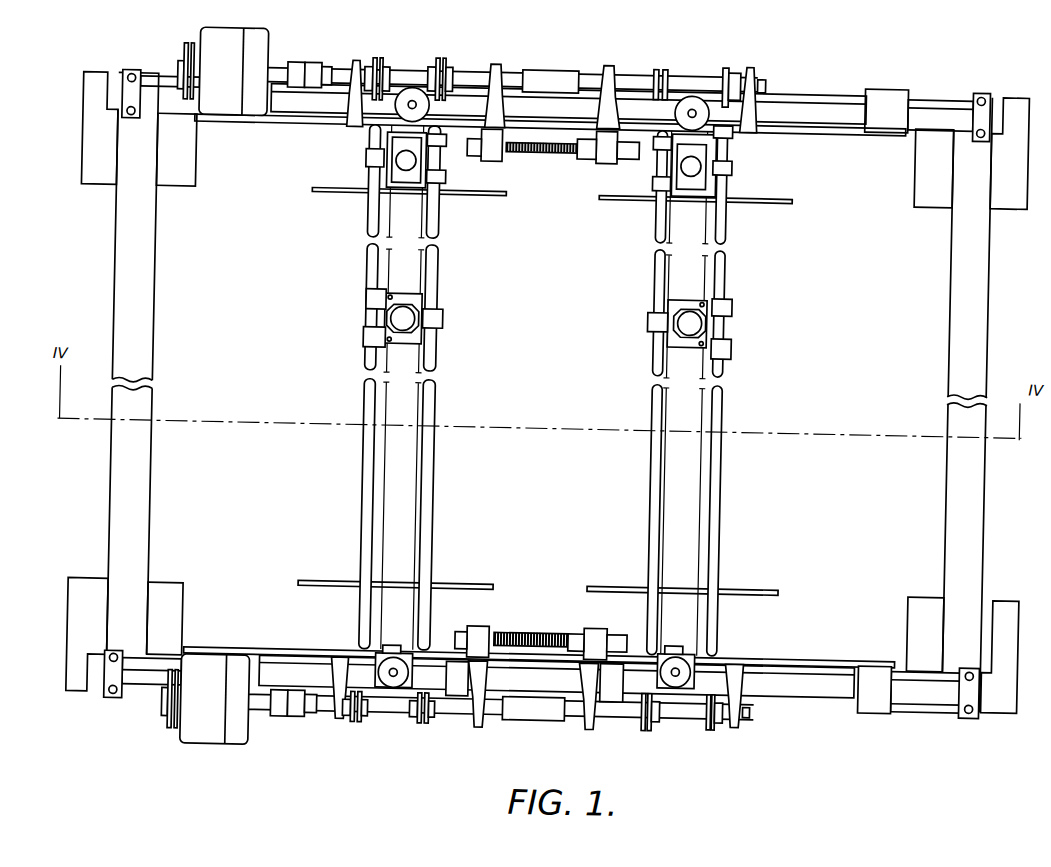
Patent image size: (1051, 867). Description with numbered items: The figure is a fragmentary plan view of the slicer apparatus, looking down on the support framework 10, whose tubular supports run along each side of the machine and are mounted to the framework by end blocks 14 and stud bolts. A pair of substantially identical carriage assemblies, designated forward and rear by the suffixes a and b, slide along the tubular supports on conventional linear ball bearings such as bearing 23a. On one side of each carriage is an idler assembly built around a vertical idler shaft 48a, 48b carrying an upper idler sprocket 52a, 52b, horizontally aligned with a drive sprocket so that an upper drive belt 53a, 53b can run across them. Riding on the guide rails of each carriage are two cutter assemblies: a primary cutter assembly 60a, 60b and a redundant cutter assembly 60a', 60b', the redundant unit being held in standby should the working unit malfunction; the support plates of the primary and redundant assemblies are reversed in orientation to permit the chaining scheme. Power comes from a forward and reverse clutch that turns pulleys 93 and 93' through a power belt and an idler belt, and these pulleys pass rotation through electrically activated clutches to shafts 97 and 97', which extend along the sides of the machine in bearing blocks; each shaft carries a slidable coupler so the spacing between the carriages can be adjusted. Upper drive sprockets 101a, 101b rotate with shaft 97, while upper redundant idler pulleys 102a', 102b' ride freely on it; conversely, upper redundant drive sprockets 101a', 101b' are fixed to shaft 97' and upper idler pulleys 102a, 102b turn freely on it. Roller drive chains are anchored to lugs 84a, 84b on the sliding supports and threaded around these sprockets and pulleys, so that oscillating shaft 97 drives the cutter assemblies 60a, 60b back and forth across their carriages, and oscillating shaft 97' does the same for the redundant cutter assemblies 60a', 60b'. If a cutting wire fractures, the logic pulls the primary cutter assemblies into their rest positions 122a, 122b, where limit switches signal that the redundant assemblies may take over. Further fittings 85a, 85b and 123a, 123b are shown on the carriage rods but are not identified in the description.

The support framework 10 is at (75, 146).
The end blocks 14 is at (973, 670).
The linear ball bearing 23a is at (466, 698).
The vertical idler shaft 48a is at (370, 156).
The vertical idler shaft 48b is at (716, 132).
The upper idler sprocket 52a is at (403, 110).
The upper idler sprocket 52b is at (692, 113).
The upper drive belt 53a is at (389, 271).
The upper drive belt 53b is at (677, 253).
The cutter assembly 60a is at (440, 312).
The cutter assembly 60b is at (679, 309).
The redundant cutter assembly 60a' is at (446, 187).
The redundant cutter assembly 60b' is at (730, 187).
The lug 84a is at (364, 298).
The lug 84b is at (728, 298).
The collar 85a is at (366, 284).
The collar 85b is at (722, 288).
The pulley 93 is at (164, 66).
The pulley 93' is at (152, 714).
The shaft 97 is at (783, 78).
The shaft 97' is at (791, 722).
The upper drive sprocket 101a is at (400, 59).
The upper drive sprocket 101b is at (750, 67).
The upper redundant drive sprocket 101a' is at (417, 731).
The upper redundant drive sprocket 101b' is at (671, 725).
The upper idler pulley 102a is at (355, 726).
The upper idler pulley 102b is at (690, 68).
The upper redundant idler pulley 102a' is at (463, 59).
The upper redundant idler pulley 102b' is at (738, 732).
The rest position 122a is at (394, 648).
The rest position 122b is at (692, 646).
The adjusting nut 123a is at (436, 150).
The adjusting nut 123b is at (727, 165).